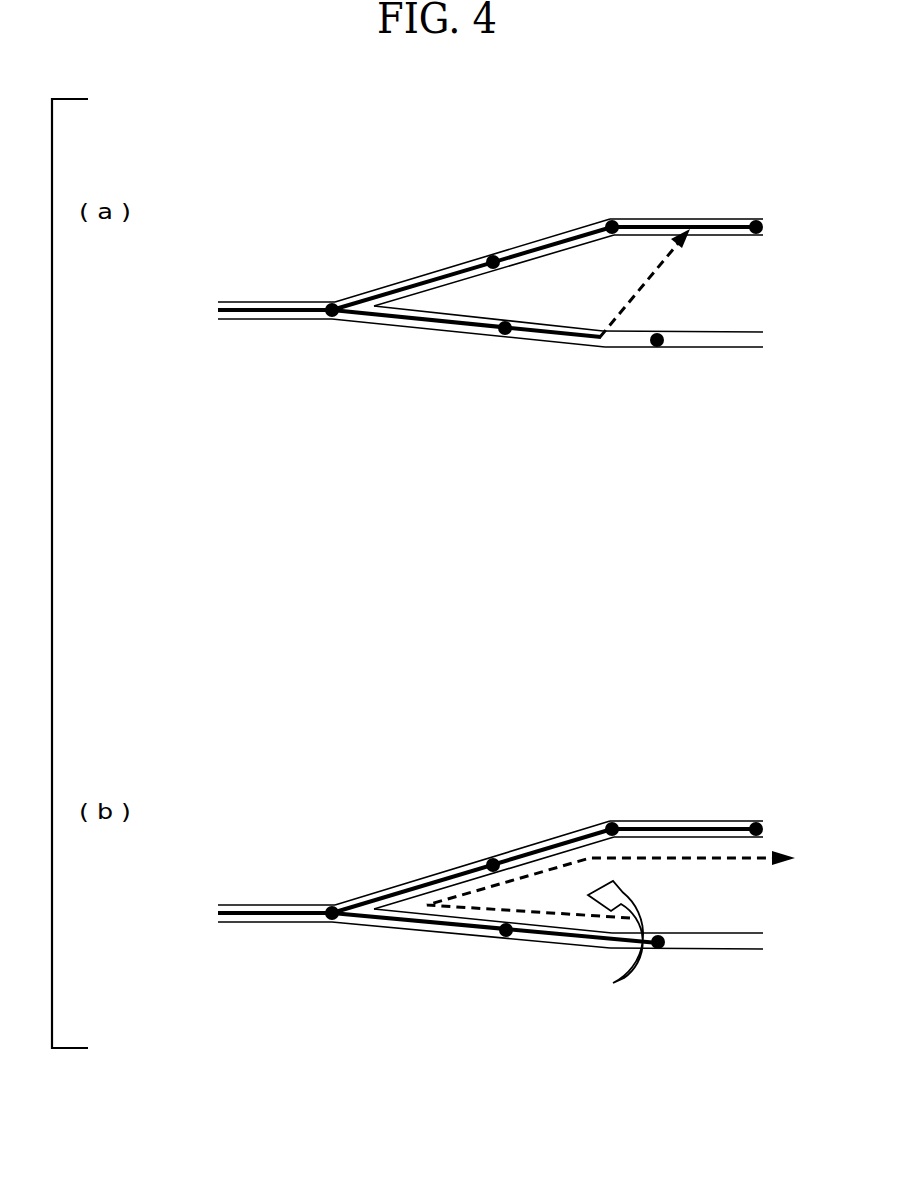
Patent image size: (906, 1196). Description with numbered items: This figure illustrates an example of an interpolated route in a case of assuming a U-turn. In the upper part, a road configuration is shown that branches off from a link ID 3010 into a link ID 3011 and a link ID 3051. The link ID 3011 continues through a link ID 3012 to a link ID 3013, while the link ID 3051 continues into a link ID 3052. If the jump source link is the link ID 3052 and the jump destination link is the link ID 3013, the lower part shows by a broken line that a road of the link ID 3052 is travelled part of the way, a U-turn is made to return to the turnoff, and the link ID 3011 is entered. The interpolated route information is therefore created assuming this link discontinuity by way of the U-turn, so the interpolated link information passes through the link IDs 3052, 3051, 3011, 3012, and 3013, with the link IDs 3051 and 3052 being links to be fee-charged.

The link ID 3010 is at (292, 320).
The link ID 3011 is at (429, 280).
The link ID 3012 is at (541, 240).
The link ID 3013 is at (655, 222).
The link ID 3051 is at (450, 328).
The link ID 3052 is at (557, 338).